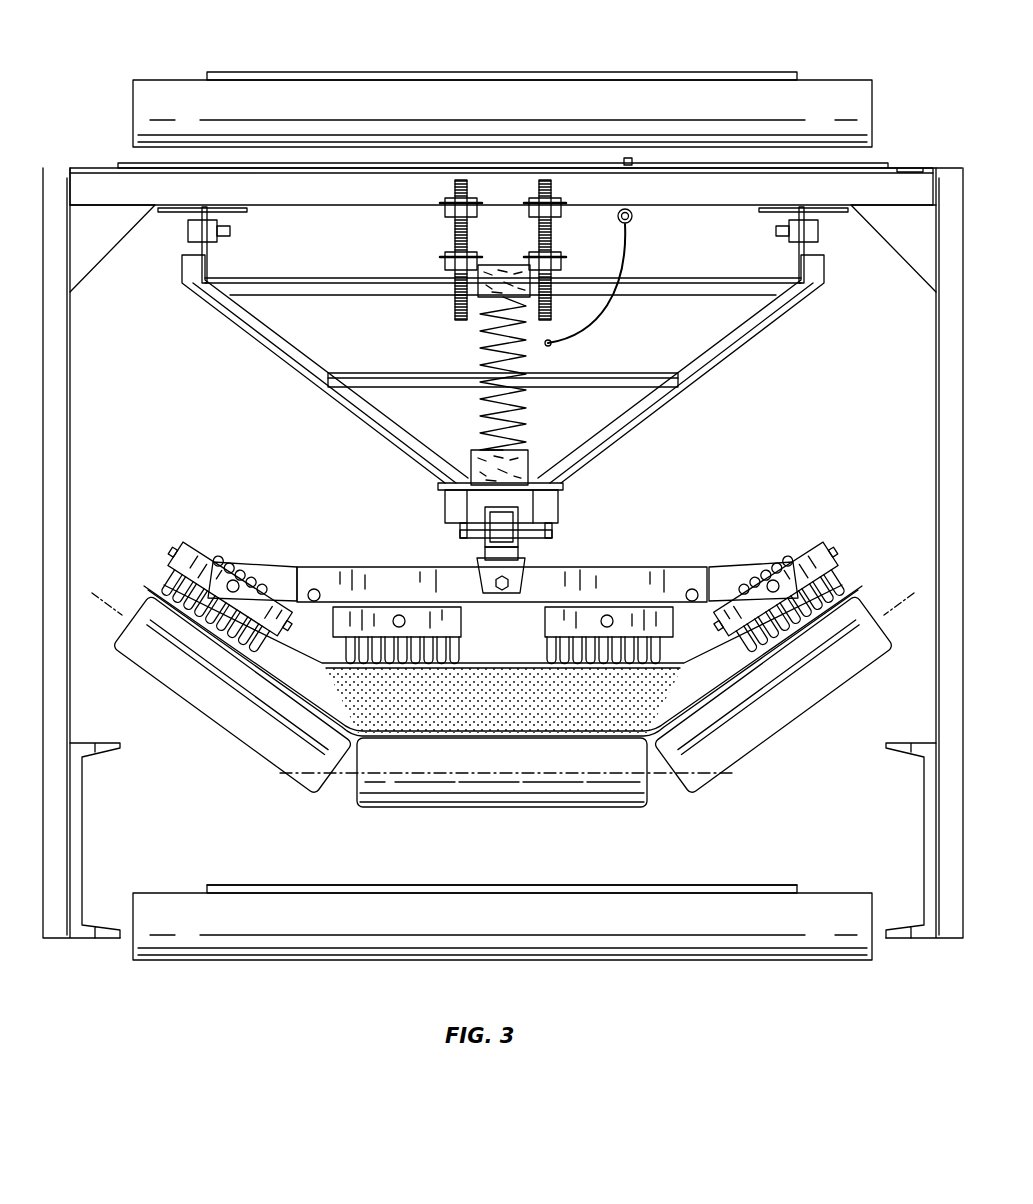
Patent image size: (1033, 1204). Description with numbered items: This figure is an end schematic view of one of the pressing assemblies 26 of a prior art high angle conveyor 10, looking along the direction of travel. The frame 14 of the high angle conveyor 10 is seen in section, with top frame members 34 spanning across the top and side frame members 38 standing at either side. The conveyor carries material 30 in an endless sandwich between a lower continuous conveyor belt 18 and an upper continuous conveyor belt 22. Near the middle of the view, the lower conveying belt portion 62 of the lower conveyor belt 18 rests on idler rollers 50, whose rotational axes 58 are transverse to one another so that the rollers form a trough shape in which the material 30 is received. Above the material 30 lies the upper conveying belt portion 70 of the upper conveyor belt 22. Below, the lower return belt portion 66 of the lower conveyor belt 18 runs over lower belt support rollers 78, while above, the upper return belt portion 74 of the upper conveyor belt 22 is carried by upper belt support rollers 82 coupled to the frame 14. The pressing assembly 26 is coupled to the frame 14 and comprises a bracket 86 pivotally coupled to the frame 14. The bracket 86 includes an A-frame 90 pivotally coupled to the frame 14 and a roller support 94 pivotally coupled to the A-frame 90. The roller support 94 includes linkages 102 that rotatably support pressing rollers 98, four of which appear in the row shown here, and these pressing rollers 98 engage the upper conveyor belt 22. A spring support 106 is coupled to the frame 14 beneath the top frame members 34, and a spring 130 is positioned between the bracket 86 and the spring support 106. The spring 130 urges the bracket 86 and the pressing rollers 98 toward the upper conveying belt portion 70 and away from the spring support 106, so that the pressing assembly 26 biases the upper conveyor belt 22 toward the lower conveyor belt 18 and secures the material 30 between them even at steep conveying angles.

The high angle conveyor 10 is at (117, 58).
The frame 14 is at (503, 527).
The top frame members 34 is at (888, 186).
The side frame members 38 is at (62, 488).
The lower continuous conveyor belt 18 is at (501, 735).
The lower conveying belt portion 62 is at (303, 705).
The lower return belt portion 66 is at (226, 885).
The upper continuous conveyor belt 22 is at (300, 72).
The upper return belt portion 74 is at (502, 415).
The upper conveying belt portion 70 is at (683, 673).
The pressing assembly 26 is at (764, 443).
The material 30 is at (445, 702).
The idler rollers 50 is at (212, 715).
The rotational axes 58 is at (637, 825).
The lower belt support rollers 78 is at (735, 950).
The upper belt support rollers 82 is at (502, 410).
The bracket 86 is at (478, 369).
The A-frame 90 is at (262, 348).
The roller support 94 is at (611, 585).
The pressing rollers 98 is at (223, 548).
The linkages 102 is at (263, 590).
The spring support 106 is at (408, 262).
The spring 130 is at (477, 417).